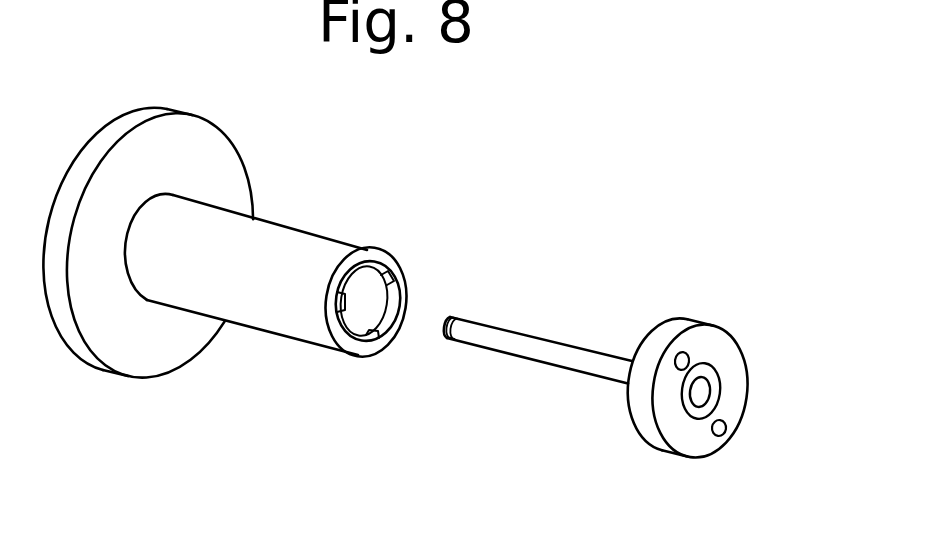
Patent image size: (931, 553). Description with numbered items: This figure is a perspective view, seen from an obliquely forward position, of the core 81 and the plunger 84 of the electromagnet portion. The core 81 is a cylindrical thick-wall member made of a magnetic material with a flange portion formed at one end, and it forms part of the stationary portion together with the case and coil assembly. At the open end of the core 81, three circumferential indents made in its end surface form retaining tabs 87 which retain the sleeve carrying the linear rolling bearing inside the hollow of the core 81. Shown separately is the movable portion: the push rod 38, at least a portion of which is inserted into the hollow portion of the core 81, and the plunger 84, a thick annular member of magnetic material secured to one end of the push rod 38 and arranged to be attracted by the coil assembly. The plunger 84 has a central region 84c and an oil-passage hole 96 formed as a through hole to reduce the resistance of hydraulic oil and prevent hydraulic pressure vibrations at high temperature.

The core 81 is at (288, 243).
The retaining tabs 87 is at (393, 277).
The push rod 38 is at (537, 342).
The plunger 84 is at (739, 365).
The hub of disk 84c is at (720, 378).
The oil-passage hole 96 is at (727, 428).